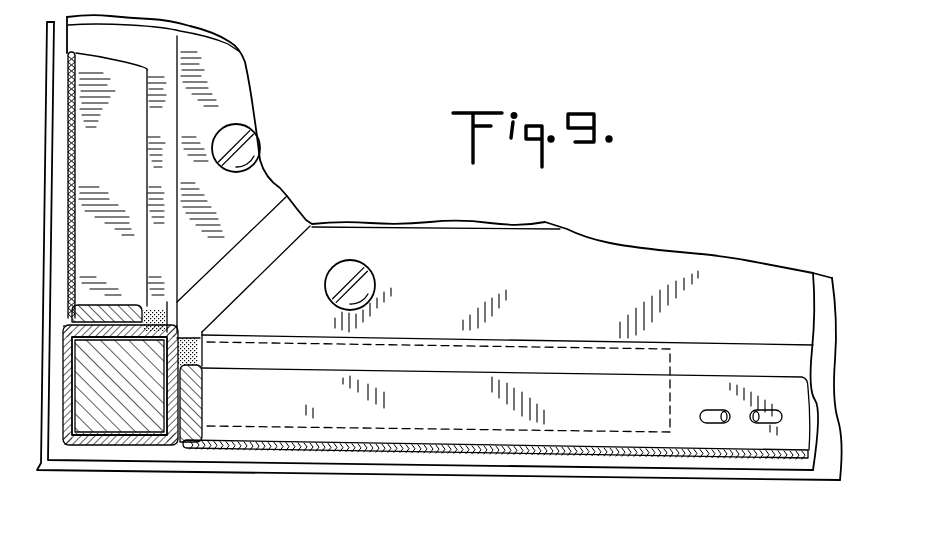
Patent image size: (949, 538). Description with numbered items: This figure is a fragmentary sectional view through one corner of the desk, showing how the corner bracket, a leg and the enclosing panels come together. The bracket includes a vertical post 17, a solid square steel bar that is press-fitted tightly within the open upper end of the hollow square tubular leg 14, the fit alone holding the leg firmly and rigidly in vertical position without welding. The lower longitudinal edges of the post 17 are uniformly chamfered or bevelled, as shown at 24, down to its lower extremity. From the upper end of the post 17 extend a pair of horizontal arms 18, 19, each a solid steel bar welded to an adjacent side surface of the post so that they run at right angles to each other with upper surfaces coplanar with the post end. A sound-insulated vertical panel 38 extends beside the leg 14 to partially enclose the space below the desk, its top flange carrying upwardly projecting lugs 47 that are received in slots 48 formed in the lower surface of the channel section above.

The leg 14 is at (95, 444).
The vertical post 17 is at (87, 385).
The horizontal arm 18 is at (178, 314).
The horizontal arm 19 is at (568, 347).
The chamfer 24 is at (72, 341).
The vertical panel 38 is at (68, 100).
The lug 47 is at (717, 425).
The slot 48 is at (757, 425).